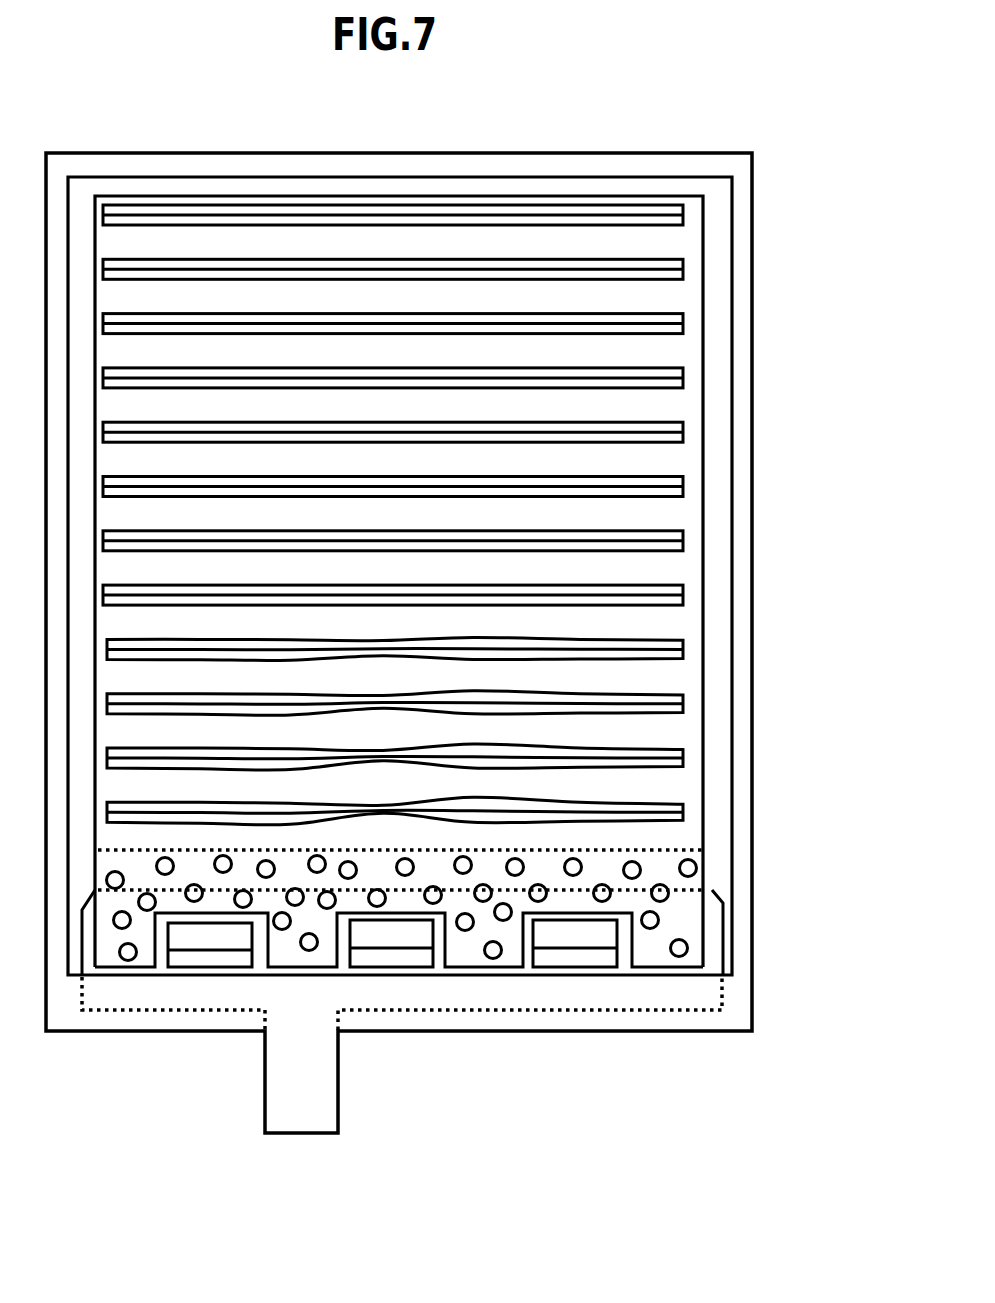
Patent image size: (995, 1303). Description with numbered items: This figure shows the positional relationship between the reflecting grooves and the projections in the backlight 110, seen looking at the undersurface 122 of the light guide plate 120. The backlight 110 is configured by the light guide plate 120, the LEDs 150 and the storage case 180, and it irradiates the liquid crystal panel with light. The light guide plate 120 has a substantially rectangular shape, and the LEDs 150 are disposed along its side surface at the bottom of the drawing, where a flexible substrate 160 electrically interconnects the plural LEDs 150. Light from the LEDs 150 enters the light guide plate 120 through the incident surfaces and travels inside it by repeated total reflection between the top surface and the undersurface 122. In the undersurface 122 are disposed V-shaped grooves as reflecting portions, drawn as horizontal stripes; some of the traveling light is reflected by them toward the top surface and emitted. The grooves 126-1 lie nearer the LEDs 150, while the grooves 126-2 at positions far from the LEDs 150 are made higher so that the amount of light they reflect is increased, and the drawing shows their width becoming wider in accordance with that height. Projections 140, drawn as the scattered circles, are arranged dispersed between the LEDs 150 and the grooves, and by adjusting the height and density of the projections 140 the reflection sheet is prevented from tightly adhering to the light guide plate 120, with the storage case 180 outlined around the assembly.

The backlight 110 is at (400, 1033).
The light guide plate 120 is at (700, 435).
The undersurface 122 is at (652, 347).
The grooves 126-1 is at (675, 605).
The grooves 126-2 is at (673, 800).
The projections 140 is at (690, 949).
The LEDs 150 is at (545, 958).
The flexible substrate 160 is at (198, 987).
The storage case 180 is at (627, 1020).